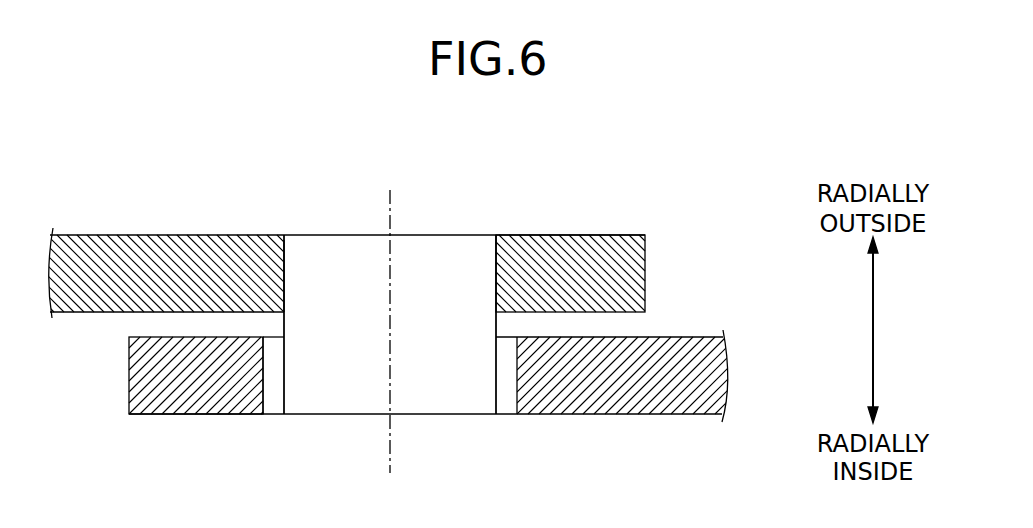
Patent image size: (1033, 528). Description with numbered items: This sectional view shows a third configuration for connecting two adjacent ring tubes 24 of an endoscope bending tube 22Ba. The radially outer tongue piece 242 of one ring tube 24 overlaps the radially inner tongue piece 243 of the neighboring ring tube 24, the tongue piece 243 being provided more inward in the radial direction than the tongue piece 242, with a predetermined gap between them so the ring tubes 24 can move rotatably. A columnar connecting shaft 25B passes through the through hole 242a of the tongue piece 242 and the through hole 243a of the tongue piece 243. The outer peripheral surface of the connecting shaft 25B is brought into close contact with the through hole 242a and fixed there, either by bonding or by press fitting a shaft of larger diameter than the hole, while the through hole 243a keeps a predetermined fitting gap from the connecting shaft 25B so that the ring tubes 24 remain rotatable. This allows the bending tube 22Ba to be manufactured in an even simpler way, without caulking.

The bending tube 22Ba is at (93, 220).
The through hole 242a is at (285, 283).
The connecting shaft 25B is at (456, 220).
The tongue piece 242 is at (612, 235).
The ring tube 24 is at (693, 327).
The tongue piece 243 is at (177, 415).
The through hole 243a is at (263, 393).